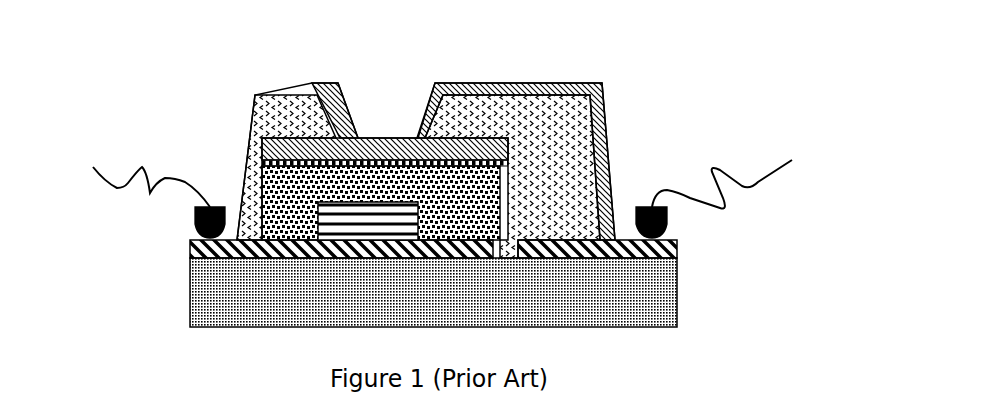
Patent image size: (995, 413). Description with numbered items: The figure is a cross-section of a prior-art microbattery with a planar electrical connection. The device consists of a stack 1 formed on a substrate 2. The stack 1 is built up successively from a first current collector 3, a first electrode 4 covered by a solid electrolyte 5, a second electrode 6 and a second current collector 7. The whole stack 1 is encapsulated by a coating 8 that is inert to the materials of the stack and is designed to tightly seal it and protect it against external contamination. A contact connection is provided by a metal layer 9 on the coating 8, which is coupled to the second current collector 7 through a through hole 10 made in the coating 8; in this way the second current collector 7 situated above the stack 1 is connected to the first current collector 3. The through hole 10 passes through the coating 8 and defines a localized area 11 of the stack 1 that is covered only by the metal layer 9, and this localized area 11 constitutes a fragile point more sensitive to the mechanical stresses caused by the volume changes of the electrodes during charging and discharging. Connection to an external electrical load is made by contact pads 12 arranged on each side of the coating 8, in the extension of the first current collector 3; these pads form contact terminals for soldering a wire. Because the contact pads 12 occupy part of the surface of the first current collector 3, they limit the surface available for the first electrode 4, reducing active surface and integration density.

The stack 1 is at (472, 122).
The substrate 2 is at (590, 292).
The first current collector 3 is at (677, 257).
The first electrode 4 is at (338, 232).
The solid electrolyte 5 is at (268, 140).
The second electrode 6 is at (510, 177).
The second current collector 7 is at (488, 140).
The coating 8 is at (567, 122).
The metal layer 9 is at (570, 83).
The through hole 10 is at (325, 98).
The localized area 11 is at (347, 78).
The contact pads 12 is at (203, 230).